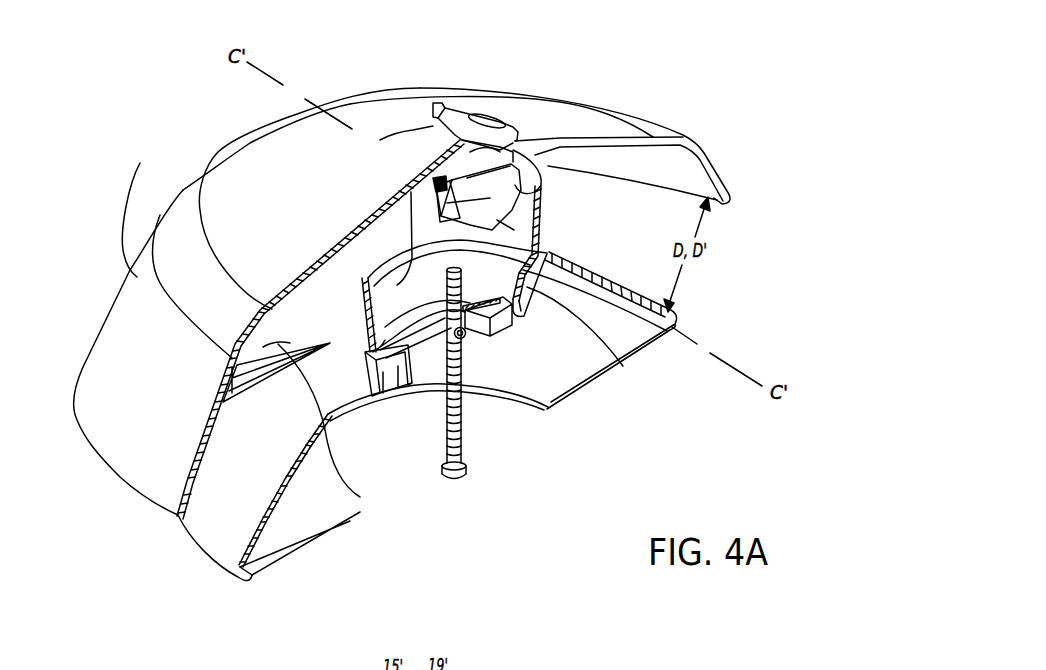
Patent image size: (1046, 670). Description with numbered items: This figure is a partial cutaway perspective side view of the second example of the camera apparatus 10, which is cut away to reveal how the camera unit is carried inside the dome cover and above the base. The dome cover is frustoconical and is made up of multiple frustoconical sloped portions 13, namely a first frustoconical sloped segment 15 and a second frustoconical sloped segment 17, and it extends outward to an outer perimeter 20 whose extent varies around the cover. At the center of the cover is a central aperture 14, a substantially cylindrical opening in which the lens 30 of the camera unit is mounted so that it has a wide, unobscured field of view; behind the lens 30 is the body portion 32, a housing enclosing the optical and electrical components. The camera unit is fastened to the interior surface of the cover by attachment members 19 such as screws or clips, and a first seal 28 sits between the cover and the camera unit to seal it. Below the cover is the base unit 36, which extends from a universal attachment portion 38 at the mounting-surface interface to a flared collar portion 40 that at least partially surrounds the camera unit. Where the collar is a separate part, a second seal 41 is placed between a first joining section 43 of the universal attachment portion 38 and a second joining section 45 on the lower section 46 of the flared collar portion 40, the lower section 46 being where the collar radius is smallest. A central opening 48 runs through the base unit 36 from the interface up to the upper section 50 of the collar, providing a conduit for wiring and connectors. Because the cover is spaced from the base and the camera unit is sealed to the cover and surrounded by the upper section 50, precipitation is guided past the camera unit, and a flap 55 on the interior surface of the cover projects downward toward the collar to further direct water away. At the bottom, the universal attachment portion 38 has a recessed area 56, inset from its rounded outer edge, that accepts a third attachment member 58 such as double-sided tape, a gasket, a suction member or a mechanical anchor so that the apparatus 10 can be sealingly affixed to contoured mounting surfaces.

The camera apparatus 10 is at (586, 92).
The frustoconical sloped portions 13 is at (192, 220).
The central aperture 14 is at (488, 138).
The first frustoconical sloped segment 15 is at (373, 127).
The second frustoconical sloped segment 17 is at (145, 327).
The attachment members 19 is at (440, 104).
The outer perimeter 20 is at (182, 520).
The first seal 28 is at (485, 148).
The lens 30 is at (541, 176).
The body portion 32 is at (540, 228).
The base unit 36 is at (235, 542).
The universal attachment portion 38 is at (317, 545).
The flared collar portion 40 is at (363, 345).
The second seal 41 is at (531, 315).
The first joining section 43 is at (630, 358).
The second joining section 45 is at (410, 192).
The lower section 46 is at (362, 385).
The central opening 48 is at (490, 340).
The upper section 50 is at (370, 352).
The flap 55 is at (360, 497).
The recessed area 56 is at (583, 397).
The third attachment member 58 is at (462, 458).